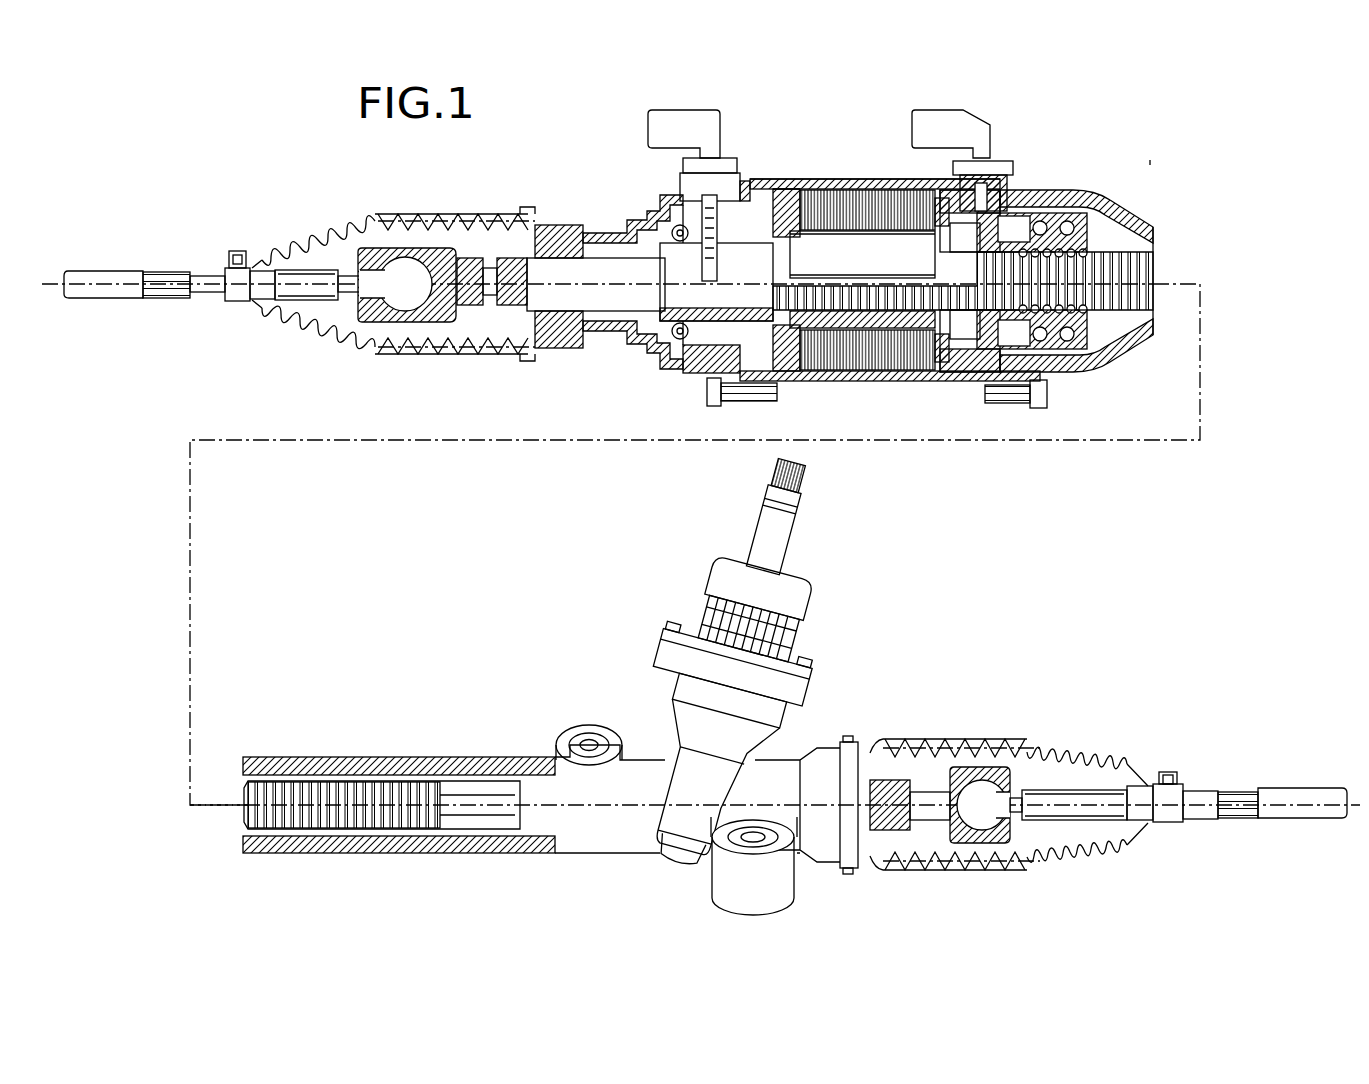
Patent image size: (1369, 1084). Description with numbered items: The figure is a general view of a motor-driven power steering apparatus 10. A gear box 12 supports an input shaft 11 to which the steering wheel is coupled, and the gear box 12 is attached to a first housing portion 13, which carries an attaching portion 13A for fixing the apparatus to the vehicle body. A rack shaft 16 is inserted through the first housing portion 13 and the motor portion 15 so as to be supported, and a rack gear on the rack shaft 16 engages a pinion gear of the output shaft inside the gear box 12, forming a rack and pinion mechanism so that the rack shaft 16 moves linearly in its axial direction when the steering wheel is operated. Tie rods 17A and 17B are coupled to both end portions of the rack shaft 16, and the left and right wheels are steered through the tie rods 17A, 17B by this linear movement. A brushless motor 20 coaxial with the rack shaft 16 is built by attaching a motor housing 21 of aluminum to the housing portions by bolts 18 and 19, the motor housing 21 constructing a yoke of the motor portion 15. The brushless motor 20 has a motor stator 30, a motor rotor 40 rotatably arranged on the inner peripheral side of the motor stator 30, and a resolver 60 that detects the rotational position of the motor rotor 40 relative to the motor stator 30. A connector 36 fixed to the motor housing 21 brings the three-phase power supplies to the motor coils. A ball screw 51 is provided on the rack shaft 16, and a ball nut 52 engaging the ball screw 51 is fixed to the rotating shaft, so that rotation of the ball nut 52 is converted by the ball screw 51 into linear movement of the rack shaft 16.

The motor-driven power steering apparatus 10 is at (1157, 157).
The input shaft 11 is at (797, 528).
The gear box 12 is at (682, 690).
The first housing portion 13 is at (596, 846).
The attaching portion 13A is at (722, 885).
The motor portion 15 is at (808, 187).
The rack shaft 16 is at (572, 300).
The tie rod 17A is at (107, 272).
The tie rod 17B is at (1300, 788).
The bolt 18 is at (1044, 402).
The bolt 19 is at (708, 398).
The brushless motor 20 is at (862, 179).
The motor housing 21 is at (760, 185).
The motor stator 30 is at (895, 377).
The connector 36 is at (962, 138).
The motor rotor 40 is at (838, 377).
The ball screw 51 is at (1135, 330).
The ball nut 52 is at (1090, 207).
The resolver 60 is at (700, 202).